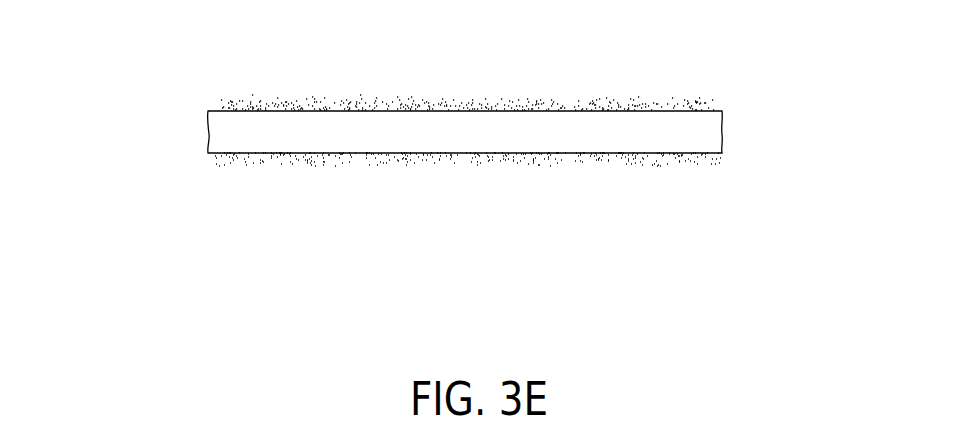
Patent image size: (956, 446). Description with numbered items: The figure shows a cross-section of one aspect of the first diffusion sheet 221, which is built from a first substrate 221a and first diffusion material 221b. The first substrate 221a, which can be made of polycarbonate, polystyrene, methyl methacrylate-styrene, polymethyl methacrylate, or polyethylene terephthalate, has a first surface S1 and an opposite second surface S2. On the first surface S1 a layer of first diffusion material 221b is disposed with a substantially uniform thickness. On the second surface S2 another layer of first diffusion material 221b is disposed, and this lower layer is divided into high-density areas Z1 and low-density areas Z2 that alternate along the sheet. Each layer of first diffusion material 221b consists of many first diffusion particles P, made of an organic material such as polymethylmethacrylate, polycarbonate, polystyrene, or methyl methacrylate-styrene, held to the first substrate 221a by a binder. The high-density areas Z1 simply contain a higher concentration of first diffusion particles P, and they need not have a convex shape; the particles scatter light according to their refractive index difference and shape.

The first diffusion sheet 221 is at (92, 58).
The first substrate 221a is at (707, 138).
The first diffusion material 221b is at (715, 98).
The first surface S1 is at (219, 105).
The second surface S2 is at (211, 159).
The first diffusion particles P is at (482, 103).
The high-density area Z1 is at (593, 167).
The low-density area Z2 is at (522, 163).